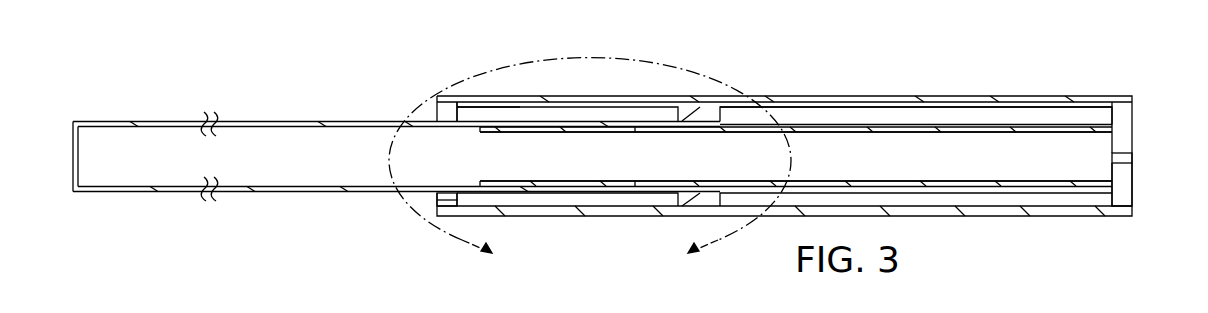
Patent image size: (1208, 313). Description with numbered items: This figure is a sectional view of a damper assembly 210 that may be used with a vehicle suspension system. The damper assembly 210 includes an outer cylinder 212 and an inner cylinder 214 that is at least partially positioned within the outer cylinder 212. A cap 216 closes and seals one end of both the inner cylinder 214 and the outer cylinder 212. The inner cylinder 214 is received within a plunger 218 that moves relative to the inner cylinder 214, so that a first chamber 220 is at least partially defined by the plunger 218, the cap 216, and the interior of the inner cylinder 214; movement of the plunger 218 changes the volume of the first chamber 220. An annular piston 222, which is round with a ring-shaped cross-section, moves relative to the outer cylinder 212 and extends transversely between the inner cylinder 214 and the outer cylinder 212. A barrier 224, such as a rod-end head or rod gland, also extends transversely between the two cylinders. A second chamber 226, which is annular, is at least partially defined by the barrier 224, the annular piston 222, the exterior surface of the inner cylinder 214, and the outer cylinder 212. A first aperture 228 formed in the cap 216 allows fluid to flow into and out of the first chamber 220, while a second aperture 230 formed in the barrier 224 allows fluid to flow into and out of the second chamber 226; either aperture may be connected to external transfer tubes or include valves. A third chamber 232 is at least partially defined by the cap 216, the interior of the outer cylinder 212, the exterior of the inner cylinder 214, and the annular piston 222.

The damper assembly 210 is at (1106, 84).
The outer cylinder 212 is at (870, 98).
The inner cylinder 214 is at (947, 123).
The cap 216 is at (1132, 191).
The plunger 218 is at (80, 160).
The first chamber 220 is at (917, 163).
The annular piston 222 is at (673, 202).
The barrier 224 is at (463, 112).
The second chamber 226 is at (603, 115).
The first aperture 228 is at (1134, 157).
The second aperture 230 is at (440, 203).
The third chamber 232 is at (1013, 117).